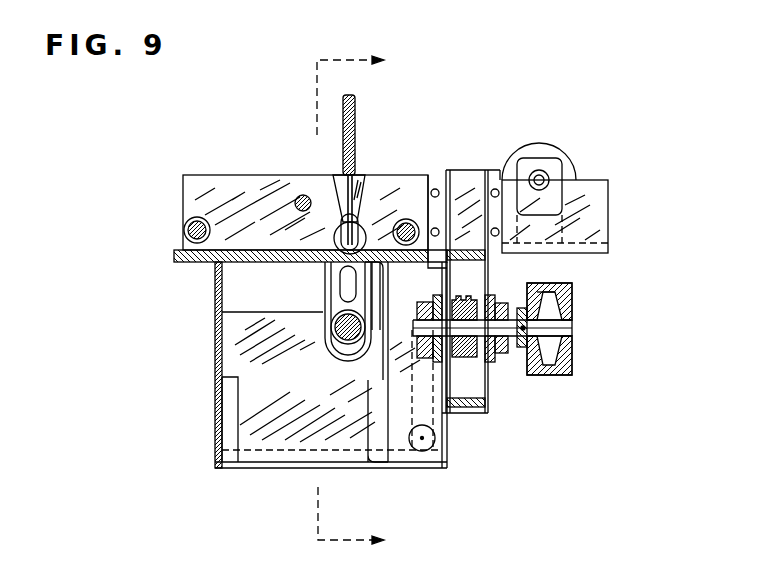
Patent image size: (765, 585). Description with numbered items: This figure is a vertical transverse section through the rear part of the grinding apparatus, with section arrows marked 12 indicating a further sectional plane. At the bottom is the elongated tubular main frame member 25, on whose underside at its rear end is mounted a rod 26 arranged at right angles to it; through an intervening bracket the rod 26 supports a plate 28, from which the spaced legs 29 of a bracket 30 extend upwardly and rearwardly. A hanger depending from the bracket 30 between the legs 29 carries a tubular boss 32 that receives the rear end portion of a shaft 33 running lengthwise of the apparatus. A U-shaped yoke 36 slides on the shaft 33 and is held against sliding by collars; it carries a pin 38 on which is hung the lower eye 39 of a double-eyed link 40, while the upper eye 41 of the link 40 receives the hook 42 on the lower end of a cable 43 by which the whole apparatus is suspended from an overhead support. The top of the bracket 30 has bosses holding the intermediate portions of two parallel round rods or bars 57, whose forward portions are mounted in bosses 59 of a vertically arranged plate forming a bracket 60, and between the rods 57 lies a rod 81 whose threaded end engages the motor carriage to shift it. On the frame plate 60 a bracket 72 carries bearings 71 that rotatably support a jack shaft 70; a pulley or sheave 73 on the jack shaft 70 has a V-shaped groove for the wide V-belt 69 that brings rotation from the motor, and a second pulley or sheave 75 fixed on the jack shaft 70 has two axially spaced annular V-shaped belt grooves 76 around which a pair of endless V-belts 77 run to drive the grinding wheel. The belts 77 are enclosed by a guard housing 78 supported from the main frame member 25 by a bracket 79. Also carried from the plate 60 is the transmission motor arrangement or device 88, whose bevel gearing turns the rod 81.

The section line 12- 12 is at (371, 308).
The main frame member 25 is at (430, 438).
The rod 26 is at (268, 472).
The plate 28 is at (230, 362).
The legs 29 is at (215, 332).
The bracket 30 is at (261, 264).
The tubular boss 32 is at (330, 346).
The shaft 33 is at (335, 324).
The U-shaped yoke 36 is at (325, 300).
The pin 38 is at (378, 288).
The lower eye 39 is at (340, 290).
The double-eyed link 40 is at (328, 274).
The upper eye 41 is at (326, 228).
The hook 42 is at (372, 218).
The cable 43 is at (357, 103).
The round rod or bar 57 is at (184, 232).
The bosses 59 is at (184, 222).
The bracket 60 is at (241, 178).
The wide V-belt 69 is at (542, 281).
The jack shaft 70 is at (572, 329).
The bearings 71 is at (431, 359).
The bracket 72 is at (480, 198).
The pulley or sheave 73 is at (575, 362).
The second pulley or sheave 75 is at (476, 336).
The annular V-shaped belt grooves 76 is at (486, 300).
The endless V-belts 77 is at (470, 302).
The guard housing 78 is at (479, 394).
The bracket 79 is at (368, 400).
The rod 81 is at (298, 196).
The transmission motor arrangement or device 88 is at (540, 150).